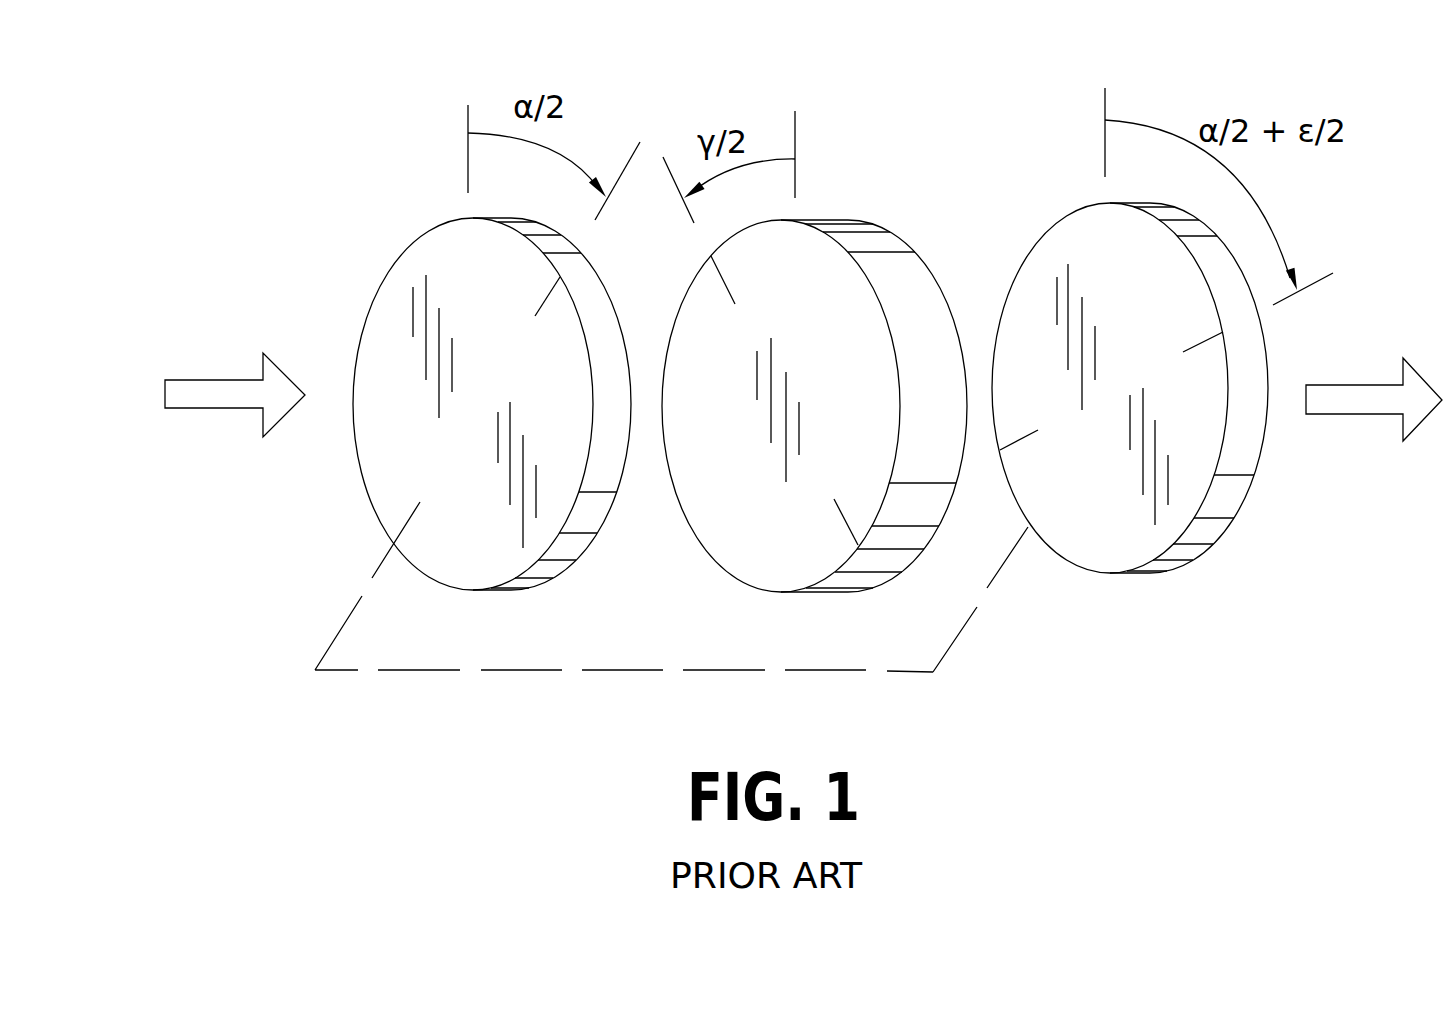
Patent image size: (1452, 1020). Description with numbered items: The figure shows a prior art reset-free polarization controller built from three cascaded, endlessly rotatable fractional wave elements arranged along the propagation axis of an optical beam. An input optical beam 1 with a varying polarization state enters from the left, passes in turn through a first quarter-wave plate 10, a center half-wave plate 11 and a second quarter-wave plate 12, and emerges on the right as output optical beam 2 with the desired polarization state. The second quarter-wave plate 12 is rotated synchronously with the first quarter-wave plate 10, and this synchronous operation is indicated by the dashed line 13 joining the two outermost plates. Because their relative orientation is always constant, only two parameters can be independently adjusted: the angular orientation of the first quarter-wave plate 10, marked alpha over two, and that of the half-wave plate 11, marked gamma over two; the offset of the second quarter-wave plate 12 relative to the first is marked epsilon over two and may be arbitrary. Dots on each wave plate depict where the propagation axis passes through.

The input optical beam 1 is at (227, 380).
The output optical beam 2 is at (1362, 385).
The first quarter-wave plate 10 is at (387, 278).
The half-wave plate 11 is at (905, 244).
The second quarter-wave plate 12 is at (1038, 243).
The dashed line 13 is at (452, 672).